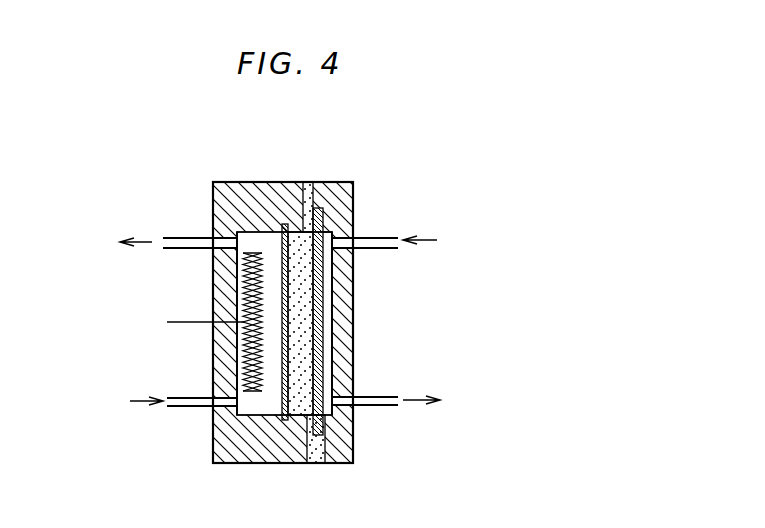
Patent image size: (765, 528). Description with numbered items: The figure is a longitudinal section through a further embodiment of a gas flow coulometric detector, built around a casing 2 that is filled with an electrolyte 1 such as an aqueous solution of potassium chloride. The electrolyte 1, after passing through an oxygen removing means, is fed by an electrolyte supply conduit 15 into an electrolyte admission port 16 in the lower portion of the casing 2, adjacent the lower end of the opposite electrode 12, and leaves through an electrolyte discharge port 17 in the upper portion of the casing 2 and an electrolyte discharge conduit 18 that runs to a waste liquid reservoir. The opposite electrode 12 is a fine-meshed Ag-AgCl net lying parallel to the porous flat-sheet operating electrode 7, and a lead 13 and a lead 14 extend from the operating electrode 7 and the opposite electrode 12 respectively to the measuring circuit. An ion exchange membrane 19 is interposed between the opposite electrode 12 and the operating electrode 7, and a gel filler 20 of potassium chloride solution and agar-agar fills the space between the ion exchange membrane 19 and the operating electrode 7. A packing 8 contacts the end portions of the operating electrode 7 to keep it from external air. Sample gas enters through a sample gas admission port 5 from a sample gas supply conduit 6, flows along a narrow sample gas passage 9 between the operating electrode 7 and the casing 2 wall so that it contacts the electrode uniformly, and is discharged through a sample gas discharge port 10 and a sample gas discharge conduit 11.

The electrolyte 1 is at (262, 243).
The casing 2 is at (337, 202).
The sample gas admission port 5 is at (353, 251).
The sample gas supply conduit 6 is at (399, 246).
The operating electrode 7 is at (317, 226).
The packing 8 is at (323, 182).
The sample gas passage 9 is at (328, 305).
The sample gas discharge port 10 is at (340, 405).
The sample gas discharge conduit 11 is at (383, 403).
The opposite electrode 12 is at (245, 283).
The lead 13 is at (315, 212).
The lead 14 is at (183, 322).
The electrolyte supply conduit 15 is at (190, 403).
The electrolyte admission port 16 is at (233, 403).
The electrolyte discharge port 17 is at (235, 242).
The electrolyte discharge conduit 18 is at (193, 246).
The ion exchange membrane 19 is at (283, 226).
The filler 20 is at (295, 405).